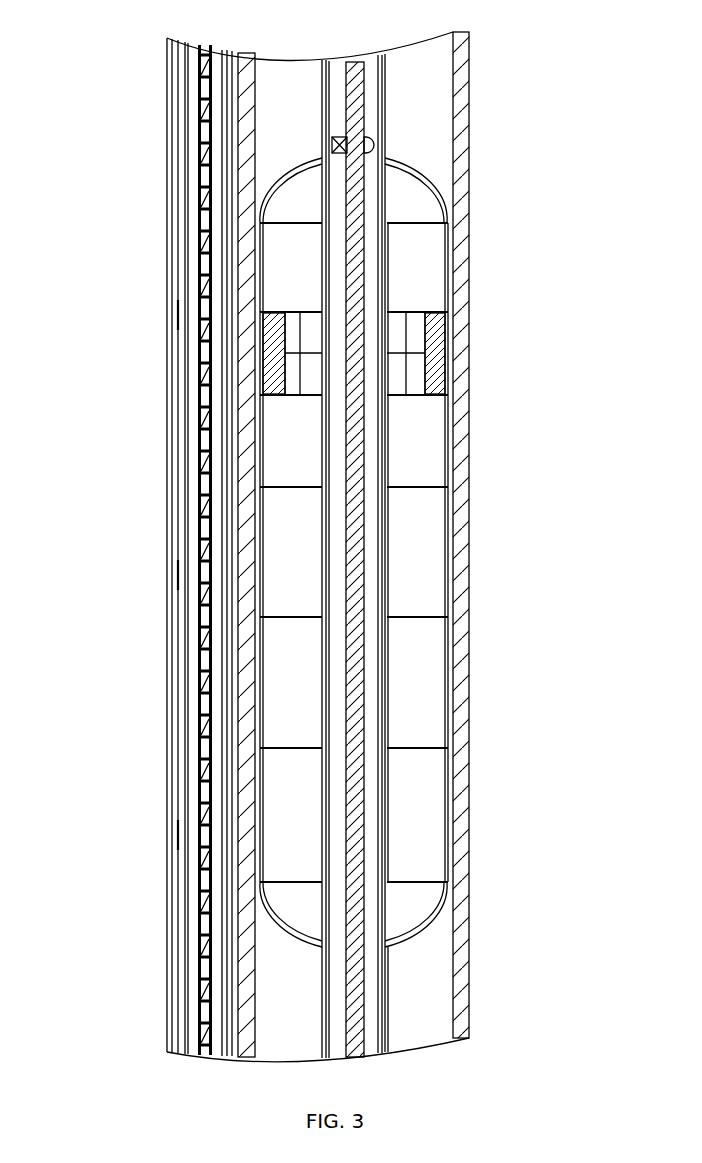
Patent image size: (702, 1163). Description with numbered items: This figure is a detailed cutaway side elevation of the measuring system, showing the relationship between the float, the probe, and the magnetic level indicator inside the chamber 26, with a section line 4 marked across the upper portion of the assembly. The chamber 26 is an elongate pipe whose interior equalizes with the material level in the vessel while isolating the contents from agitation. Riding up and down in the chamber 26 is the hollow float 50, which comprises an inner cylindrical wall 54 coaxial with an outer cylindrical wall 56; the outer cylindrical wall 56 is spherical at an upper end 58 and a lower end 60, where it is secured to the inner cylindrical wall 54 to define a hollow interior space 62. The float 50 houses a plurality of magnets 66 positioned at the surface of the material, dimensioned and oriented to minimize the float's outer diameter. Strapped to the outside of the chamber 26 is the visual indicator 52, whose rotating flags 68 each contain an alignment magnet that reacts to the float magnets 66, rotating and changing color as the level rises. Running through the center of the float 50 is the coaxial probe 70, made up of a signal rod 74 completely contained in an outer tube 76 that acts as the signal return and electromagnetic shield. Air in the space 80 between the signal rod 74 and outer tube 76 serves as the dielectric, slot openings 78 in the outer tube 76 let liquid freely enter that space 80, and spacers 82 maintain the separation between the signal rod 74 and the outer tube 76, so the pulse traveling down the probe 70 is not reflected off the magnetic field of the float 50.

The section line 4- 4 is at (542, 121).
The chamber 26 is at (468, 562).
The float 50 is at (287, 930).
The visual indicator 52 is at (153, 383).
The inner cylindrical wall 54 is at (385, 760).
The outer cylindrical wall 56 is at (447, 658).
The upper end 58 is at (435, 197).
The lower end 60 is at (422, 922).
The hollow interior space 62 is at (415, 462).
The magnets 66 is at (435, 345).
The rotating flags 68 is at (195, 678).
The probe 70 is at (383, 982).
The signal rod 74 is at (353, 530).
The outer tube 76 is at (382, 968).
The slot openings 78 is at (328, 412).
The space 80 is at (372, 78).
The spacers 82 is at (372, 145).